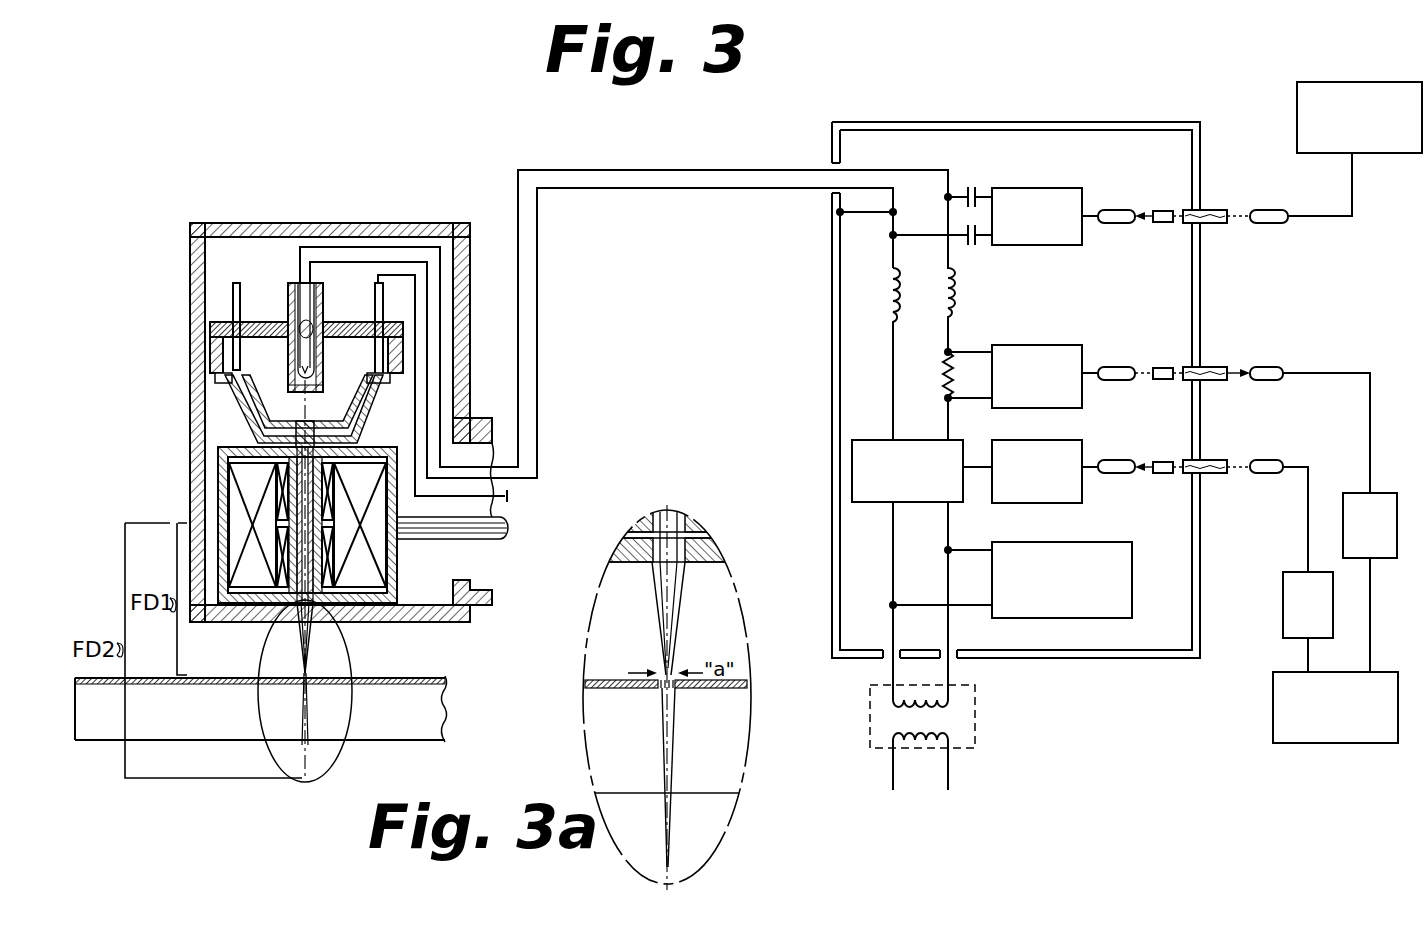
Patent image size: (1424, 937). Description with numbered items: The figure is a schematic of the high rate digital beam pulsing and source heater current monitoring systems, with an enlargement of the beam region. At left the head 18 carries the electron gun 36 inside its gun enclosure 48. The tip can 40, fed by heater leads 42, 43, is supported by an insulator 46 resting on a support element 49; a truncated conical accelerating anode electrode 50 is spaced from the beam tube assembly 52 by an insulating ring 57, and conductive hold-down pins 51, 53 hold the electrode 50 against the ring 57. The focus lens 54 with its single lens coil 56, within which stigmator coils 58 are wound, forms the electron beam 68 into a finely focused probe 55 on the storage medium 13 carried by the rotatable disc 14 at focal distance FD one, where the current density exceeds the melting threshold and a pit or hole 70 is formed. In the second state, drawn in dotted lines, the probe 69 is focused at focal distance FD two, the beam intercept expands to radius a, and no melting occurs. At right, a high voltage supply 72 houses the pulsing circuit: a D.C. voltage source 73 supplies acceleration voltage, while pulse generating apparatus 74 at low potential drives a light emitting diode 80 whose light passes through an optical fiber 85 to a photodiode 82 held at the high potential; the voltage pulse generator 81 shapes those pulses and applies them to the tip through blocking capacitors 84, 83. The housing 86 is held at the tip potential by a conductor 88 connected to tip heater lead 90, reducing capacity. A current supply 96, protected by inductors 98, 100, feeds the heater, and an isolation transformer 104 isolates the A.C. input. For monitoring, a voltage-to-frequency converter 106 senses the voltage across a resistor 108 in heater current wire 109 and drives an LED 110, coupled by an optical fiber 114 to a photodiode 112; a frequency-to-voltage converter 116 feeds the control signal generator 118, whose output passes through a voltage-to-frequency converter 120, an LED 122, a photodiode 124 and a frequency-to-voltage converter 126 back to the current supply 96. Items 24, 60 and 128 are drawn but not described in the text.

In FIG. 3, the storage medium 13 is at (77, 679).
In FIG. 3, the rotatable disc 14 is at (95, 745).
In FIG. 3, the head 18 is at (490, 288).
In FIG. 3, the mounting flange 24 is at (478, 418).
In FIG. 3, the electron gun 36 is at (388, 438).
In FIG. 3, the tip can 40 is at (230, 378).
In FIG. 3, the heater lead 42 is at (537, 297).
In FIG. 3, the heater lead 43 is at (518, 337).
In FIG. 3, the insulator 46 is at (222, 327).
In FIG. 3, the gun enclosure 48 is at (470, 240).
In FIG. 3, the support element 49 is at (205, 340).
In FIG. 3, the accelerating anode electrode 50 is at (245, 405).
In FIG. 3, the hold-down pin 51 is at (233, 290).
In FIG. 3, the beam tube assembly 52 is at (262, 432).
In FIG. 3, the hold-down pin 53 is at (378, 290).
In FIG. 3, the focus lens 54 is at (470, 598).
In FIG. 3, the lens coil 56 is at (365, 558).
In FIG. 3, the insulating ring 57 is at (380, 380).
In FIG. 3, the stigmator coils 58 is at (232, 465).
In FIG. 3, the coil bobbin 60 is at (220, 527).
In FIG. 3, the high voltage supply 72 is at (1032, 106).
In FIG. 3, the D.C. voltage source 73 is at (1090, 542).
In FIG. 3, the pulse generating apparatus 74 is at (1338, 82).
In FIG. 3, the light emitting diode 80 is at (1272, 225).
In FIG. 3, the voltage pulse generator 81 is at (1048, 188).
In FIG. 3, the photodiode 82 is at (1120, 210).
In FIG. 3, the blocking capacitor 83 is at (970, 187).
In FIG. 3, the blocking capacitor 84 is at (972, 247).
In FIG. 3, the optical fiber 85 is at (1208, 225).
In FIG. 3, the housing 86 is at (1147, 118).
In FIG. 3, the conductor 88 is at (836, 214).
In FIG. 3, the tip heater lead 90 is at (890, 237).
In FIG. 3, the current supply 96 is at (918, 437).
In FIG. 3, the inductor 98 is at (888, 300).
In FIG. 3, the inductor 100 is at (955, 297).
In FIG. 3, the isolation transformer 104 is at (975, 708).
In FIG. 3, the voltage-to-frequency converter 106 is at (1058, 345).
In FIG. 3, the resistor 108 is at (942, 382).
In FIG. 3, the heater current wire 109 is at (952, 325).
In FIG. 3, the LED 110 is at (1122, 366).
In FIG. 3, the photodiode 112 is at (1268, 366).
In FIG. 3, the optical fiber 114 is at (1205, 366).
In FIG. 3, the frequency-to-voltage converter 116 is at (1385, 493).
In FIG. 3, the control signal generator 118 is at (1273, 705).
In FIG. 3, the voltage-to-frequency converter 120 is at (1283, 590).
In FIG. 3, the LED 122 is at (1270, 460).
In FIG. 3, the photodiode 124 is at (1115, 460).
In FIG. 3, the frequency-to-voltage converter 126 is at (1062, 440).
In FIG. 3, the optical feedthrough 128 is at (1210, 460).
In FIG. 3A, the electron beam probe 55 is at (672, 692).
In FIG. 3A, the electron beam 68 is at (665, 597).
In FIG. 3A, the probe 69 is at (668, 867).
In FIG. 3A, the pit or hole 70 is at (663, 692).